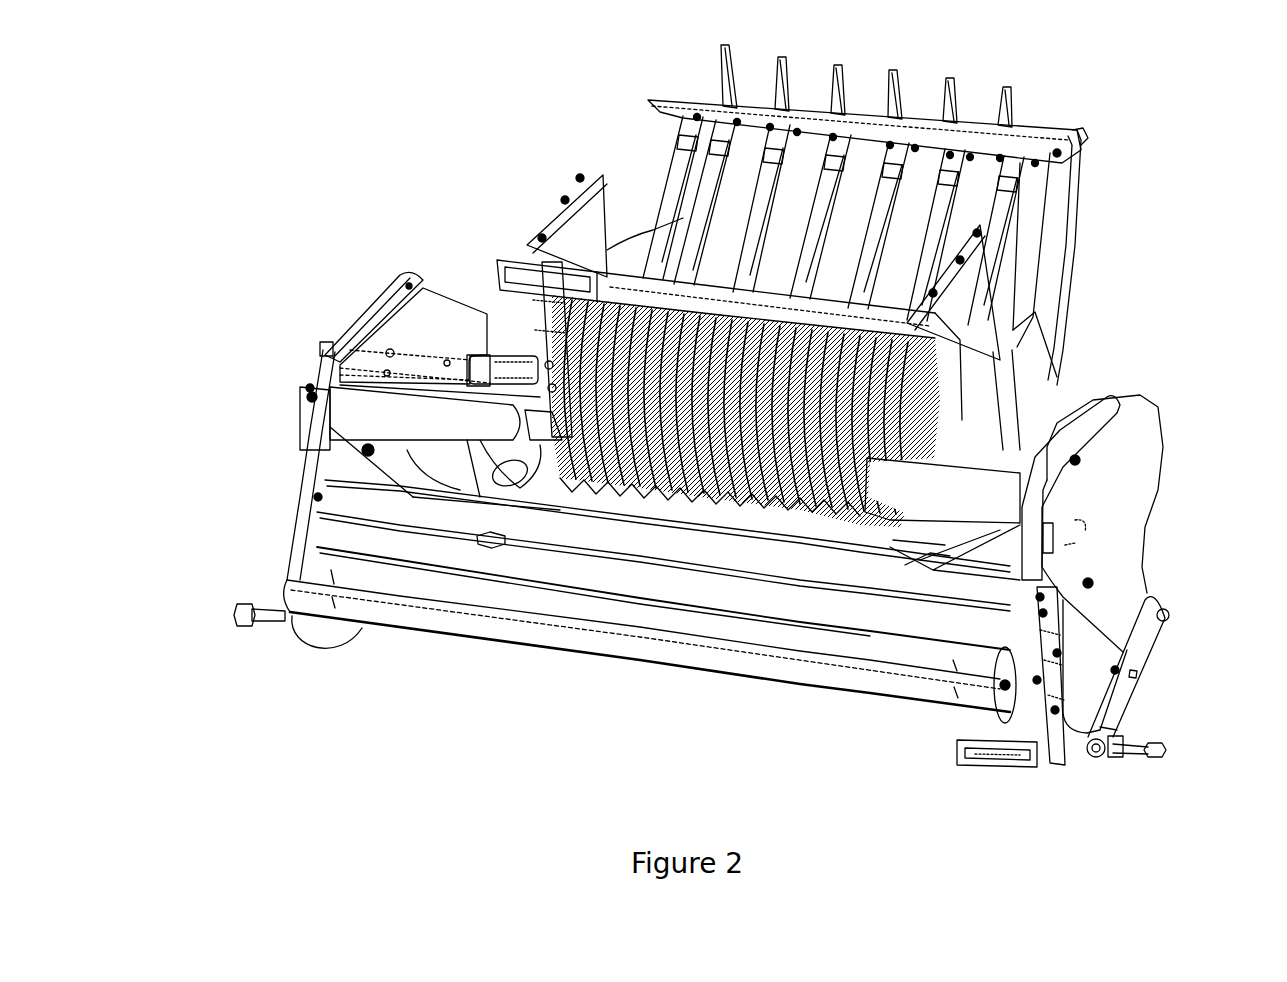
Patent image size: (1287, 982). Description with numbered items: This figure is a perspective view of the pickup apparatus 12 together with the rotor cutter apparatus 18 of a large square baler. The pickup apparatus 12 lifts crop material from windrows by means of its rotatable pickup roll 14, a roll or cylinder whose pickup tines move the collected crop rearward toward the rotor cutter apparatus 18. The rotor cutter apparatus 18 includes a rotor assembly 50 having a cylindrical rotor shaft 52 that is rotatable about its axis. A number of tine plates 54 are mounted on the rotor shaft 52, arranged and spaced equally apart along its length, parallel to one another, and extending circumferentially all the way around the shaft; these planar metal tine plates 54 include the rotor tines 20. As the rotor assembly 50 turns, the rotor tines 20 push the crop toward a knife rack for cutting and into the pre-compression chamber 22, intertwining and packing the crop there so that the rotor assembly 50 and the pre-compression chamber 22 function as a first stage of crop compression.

The pickup apparatus 12 is at (263, 528).
The pickup roll 14 is at (423, 630).
The rotor cutter apparatus 18 is at (378, 168).
The rotor tines 20 is at (567, 335).
The pre-compression chamber 22 is at (1077, 243).
The rotor assembly 50 is at (538, 348).
The rotor shaft 52 is at (515, 360).
The tine plates 54 is at (850, 414).